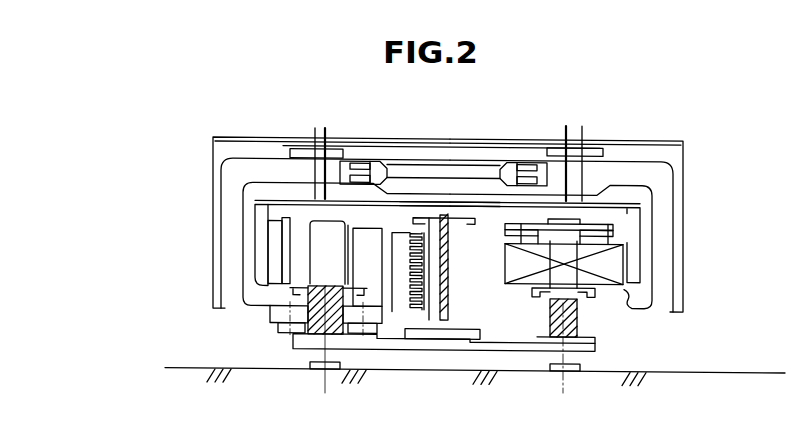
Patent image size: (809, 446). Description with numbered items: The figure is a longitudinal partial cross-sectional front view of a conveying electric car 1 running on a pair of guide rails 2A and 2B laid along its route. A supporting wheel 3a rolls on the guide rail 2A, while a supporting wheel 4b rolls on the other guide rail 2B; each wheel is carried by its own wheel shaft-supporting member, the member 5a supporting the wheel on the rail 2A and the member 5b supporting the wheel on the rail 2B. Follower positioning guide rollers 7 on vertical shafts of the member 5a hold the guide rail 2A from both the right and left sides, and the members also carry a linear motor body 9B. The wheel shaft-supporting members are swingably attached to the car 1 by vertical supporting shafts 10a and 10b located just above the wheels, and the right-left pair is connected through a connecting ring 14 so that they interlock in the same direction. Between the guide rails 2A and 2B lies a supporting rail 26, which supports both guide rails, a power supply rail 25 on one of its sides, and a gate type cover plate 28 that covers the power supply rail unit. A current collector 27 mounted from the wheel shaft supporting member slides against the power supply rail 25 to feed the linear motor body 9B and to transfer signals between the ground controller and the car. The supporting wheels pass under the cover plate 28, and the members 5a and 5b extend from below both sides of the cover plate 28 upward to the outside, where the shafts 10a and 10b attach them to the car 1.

The conveying electric car 1 is at (490, 128).
The guide rail 2A is at (306, 331).
The guide rail 2B is at (572, 308).
The supporting wheel 3a is at (327, 248).
The supporting wheel 4b is at (570, 220).
The wheel shaft-supporting member 5a is at (251, 190).
The wheel shaft-supporting member 5b is at (662, 214).
The follower positioning guide rollers 7 is at (270, 316).
The linear motor body 9B is at (612, 265).
The vertical supporting shaft 10a is at (317, 143).
The vertical supporting shaft 10b is at (573, 143).
The connecting ring 14 is at (407, 163).
The power supply rail 25 is at (425, 283).
The supporting rail 26 is at (449, 264).
The current collector 27 is at (398, 285).
The gate type cover plate 28 is at (436, 200).